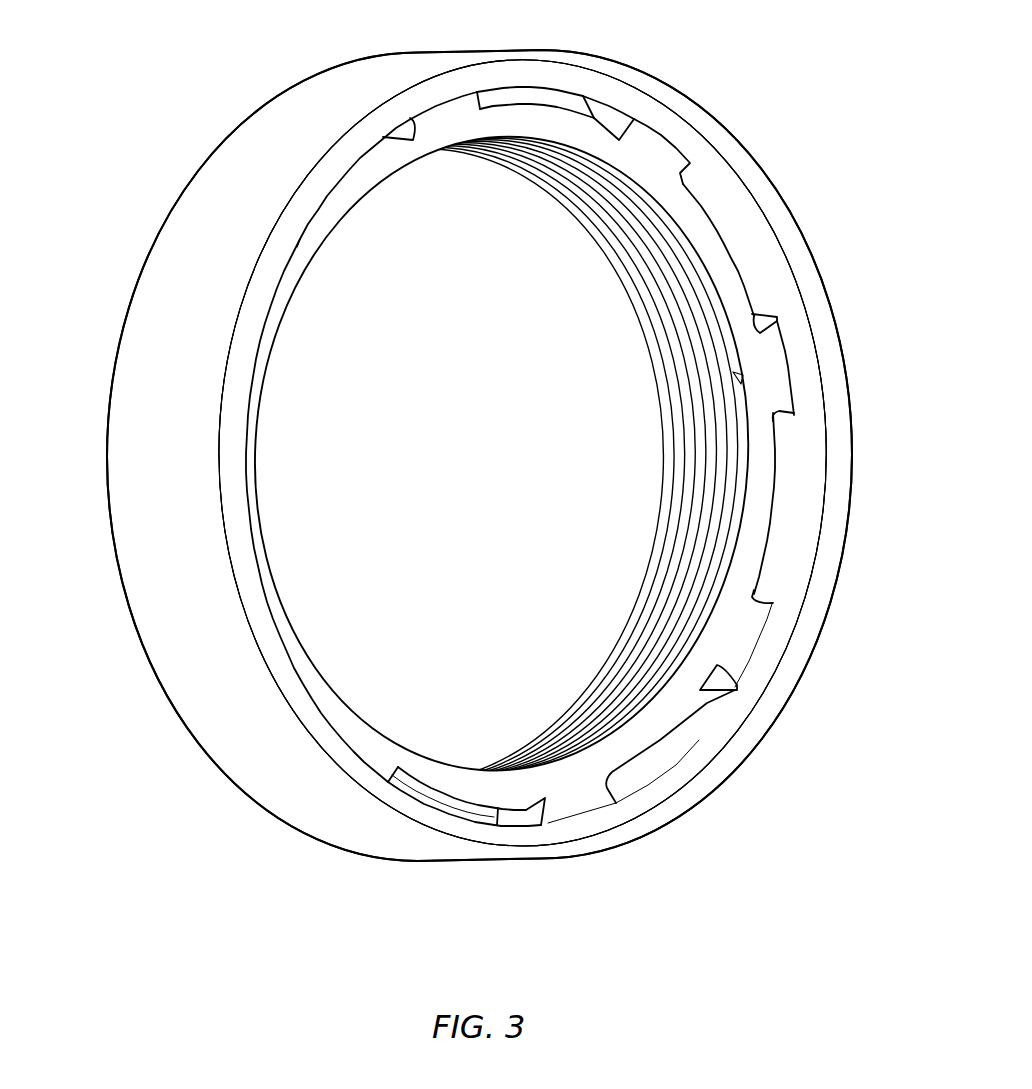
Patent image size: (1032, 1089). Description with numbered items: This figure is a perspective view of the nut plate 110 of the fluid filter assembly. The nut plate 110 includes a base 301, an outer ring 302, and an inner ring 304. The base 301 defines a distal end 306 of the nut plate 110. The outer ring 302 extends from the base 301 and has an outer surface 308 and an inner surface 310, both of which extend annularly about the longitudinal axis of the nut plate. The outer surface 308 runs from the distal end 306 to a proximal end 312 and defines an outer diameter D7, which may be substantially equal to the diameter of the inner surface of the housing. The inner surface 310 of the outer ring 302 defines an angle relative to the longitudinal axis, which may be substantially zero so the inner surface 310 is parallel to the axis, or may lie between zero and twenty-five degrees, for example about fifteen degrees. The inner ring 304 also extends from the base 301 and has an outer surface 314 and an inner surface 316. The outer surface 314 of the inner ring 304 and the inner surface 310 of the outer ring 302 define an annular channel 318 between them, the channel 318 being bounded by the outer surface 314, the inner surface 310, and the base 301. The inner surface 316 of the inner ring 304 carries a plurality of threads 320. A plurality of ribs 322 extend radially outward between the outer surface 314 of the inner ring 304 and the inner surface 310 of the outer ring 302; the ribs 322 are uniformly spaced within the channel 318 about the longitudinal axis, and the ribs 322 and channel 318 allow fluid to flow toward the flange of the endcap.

The nut plate 110 is at (730, 100).
The base 301 is at (624, 136).
The outer ring 302 is at (165, 640).
The inner ring 304 is at (597, 264).
The distal end 306 is at (110, 400).
The outer surface 308 is at (228, 244).
The inner surface 310 is at (806, 520).
The proximal end 312 is at (690, 795).
The outer surface 314 is at (380, 145).
The inner surface 316 is at (742, 381).
The channel 318 is at (730, 245).
The threads 320 is at (690, 407).
The ribs 322 is at (750, 665).
The outer diameter D7 is at (248, 740).